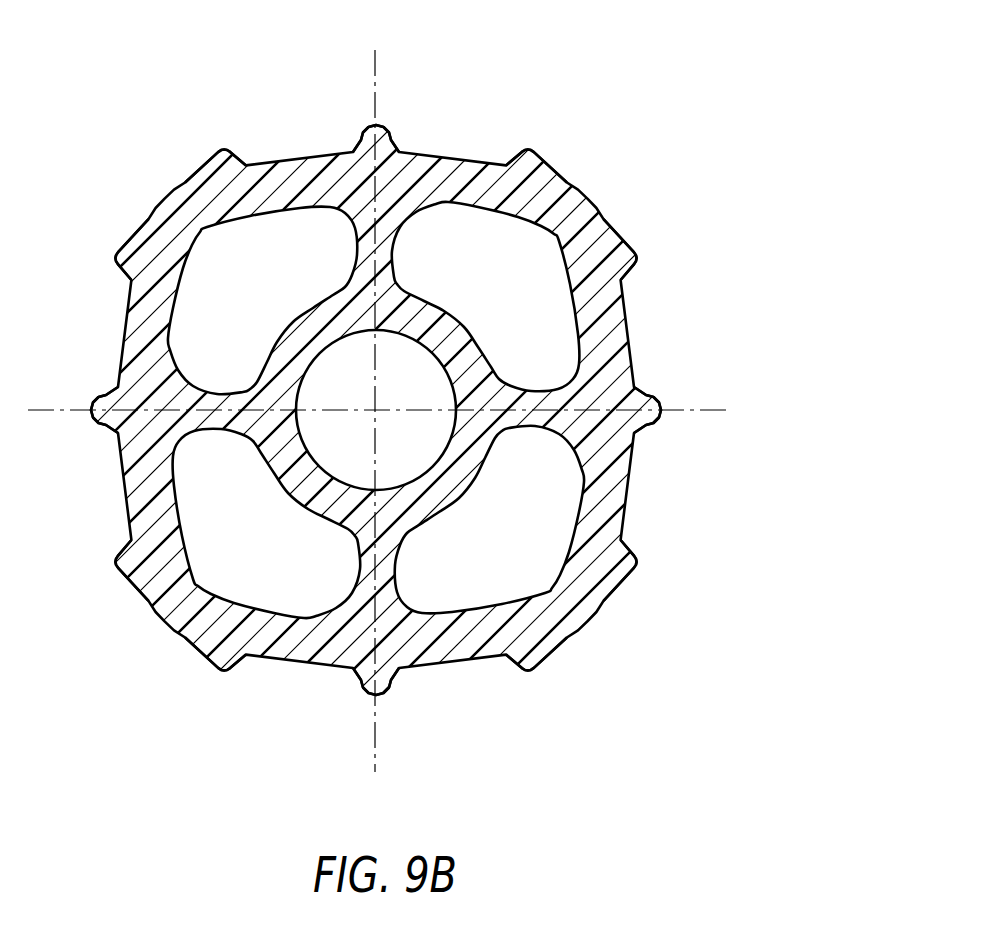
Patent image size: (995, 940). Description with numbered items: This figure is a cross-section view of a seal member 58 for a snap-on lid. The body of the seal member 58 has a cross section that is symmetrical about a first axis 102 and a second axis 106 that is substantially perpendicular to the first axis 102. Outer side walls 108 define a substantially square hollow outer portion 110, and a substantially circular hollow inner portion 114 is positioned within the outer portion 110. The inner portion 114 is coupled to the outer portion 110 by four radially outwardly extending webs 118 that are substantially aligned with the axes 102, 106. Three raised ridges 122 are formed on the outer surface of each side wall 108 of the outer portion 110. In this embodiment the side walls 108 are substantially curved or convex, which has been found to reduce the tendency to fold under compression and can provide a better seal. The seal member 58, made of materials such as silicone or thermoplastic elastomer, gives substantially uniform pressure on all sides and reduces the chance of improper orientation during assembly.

The seal member 58 is at (400, 470).
The first axis 102 is at (375, 740).
The second axis 106 is at (707, 410).
The outer side walls 108 is at (623, 331).
The outer portion 110 is at (565, 213).
The inner portion 114 is at (312, 328).
The webs 118 is at (383, 570).
The raised ridges 122 is at (109, 550).